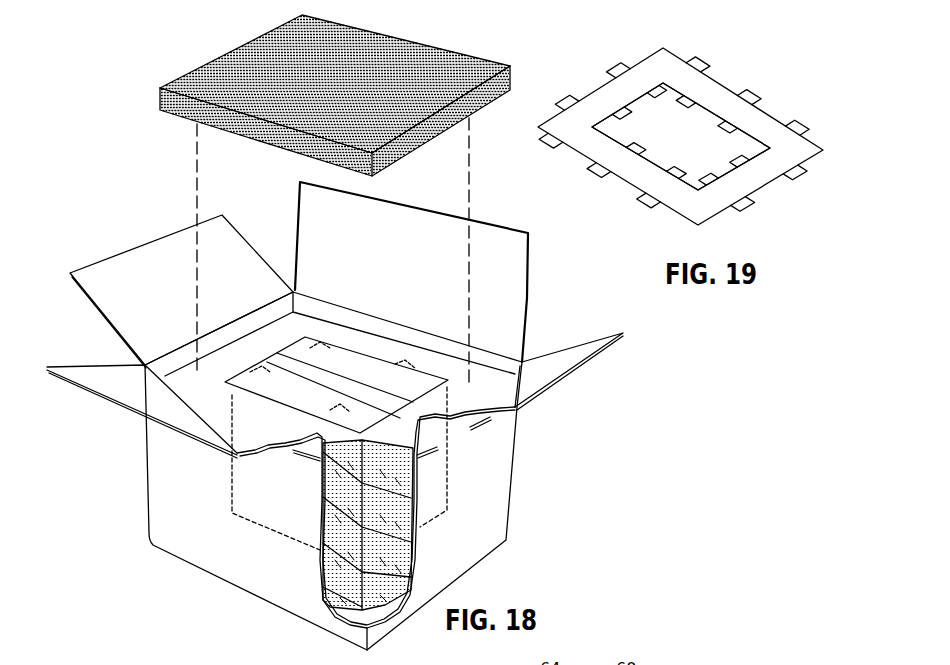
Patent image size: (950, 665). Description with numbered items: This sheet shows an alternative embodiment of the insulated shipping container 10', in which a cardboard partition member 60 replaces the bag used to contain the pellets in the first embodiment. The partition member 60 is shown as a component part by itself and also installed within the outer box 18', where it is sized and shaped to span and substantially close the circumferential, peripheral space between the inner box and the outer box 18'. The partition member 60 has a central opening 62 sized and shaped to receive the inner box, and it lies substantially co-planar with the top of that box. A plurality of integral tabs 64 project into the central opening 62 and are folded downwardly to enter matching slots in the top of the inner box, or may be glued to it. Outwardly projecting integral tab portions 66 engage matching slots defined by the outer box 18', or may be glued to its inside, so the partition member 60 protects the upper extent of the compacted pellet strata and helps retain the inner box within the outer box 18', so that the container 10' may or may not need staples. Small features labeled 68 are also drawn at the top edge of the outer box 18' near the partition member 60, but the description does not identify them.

In FIG. 18, the insulated shipping container 10' is at (296, 292).
In FIG. 18, the outer box 18' is at (335, 416).
In FIG. 18, the cardboard partition member 60 is at (231, 346).
In FIG. 19, the cardboard partition member 60 is at (596, 80).
In FIG. 19, the central opening 62 is at (710, 118).
In FIG. 19, the integral tabs 64 is at (637, 148).
In FIG. 19, the outwardly projecting integral tab portions 66 is at (620, 66).
In FIG. 18, the locking tabs 68 is at (298, 455).